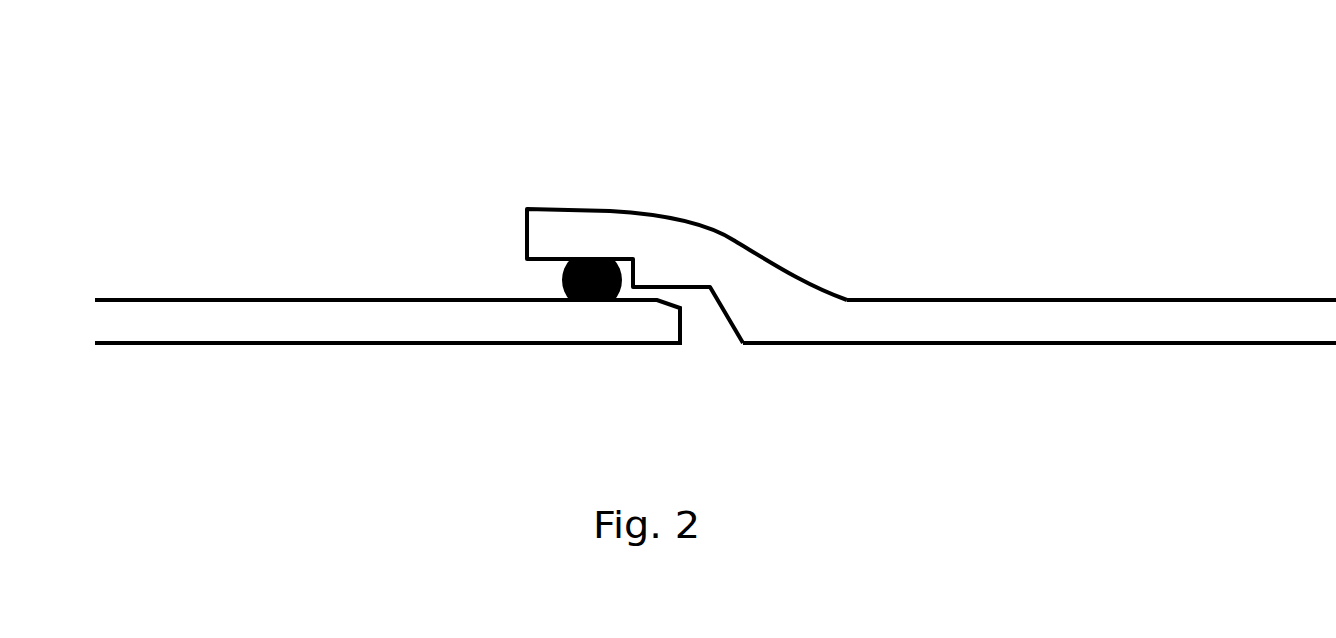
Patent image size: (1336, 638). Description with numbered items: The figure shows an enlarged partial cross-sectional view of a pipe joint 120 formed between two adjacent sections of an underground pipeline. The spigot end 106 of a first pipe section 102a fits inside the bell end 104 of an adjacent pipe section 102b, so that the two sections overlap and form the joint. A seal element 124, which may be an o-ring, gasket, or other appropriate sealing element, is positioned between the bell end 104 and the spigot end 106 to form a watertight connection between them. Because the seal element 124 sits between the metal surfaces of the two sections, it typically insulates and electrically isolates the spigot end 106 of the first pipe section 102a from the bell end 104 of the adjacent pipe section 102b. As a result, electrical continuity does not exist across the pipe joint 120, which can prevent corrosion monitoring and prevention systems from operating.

The pipe joint 120 is at (472, 116).
The first pipe section 102a is at (153, 324).
The adjacent pipe section 102b is at (1055, 318).
The bell end 104 is at (528, 333).
The spigot end 106 is at (667, 231).
The seal element 124 is at (560, 283).